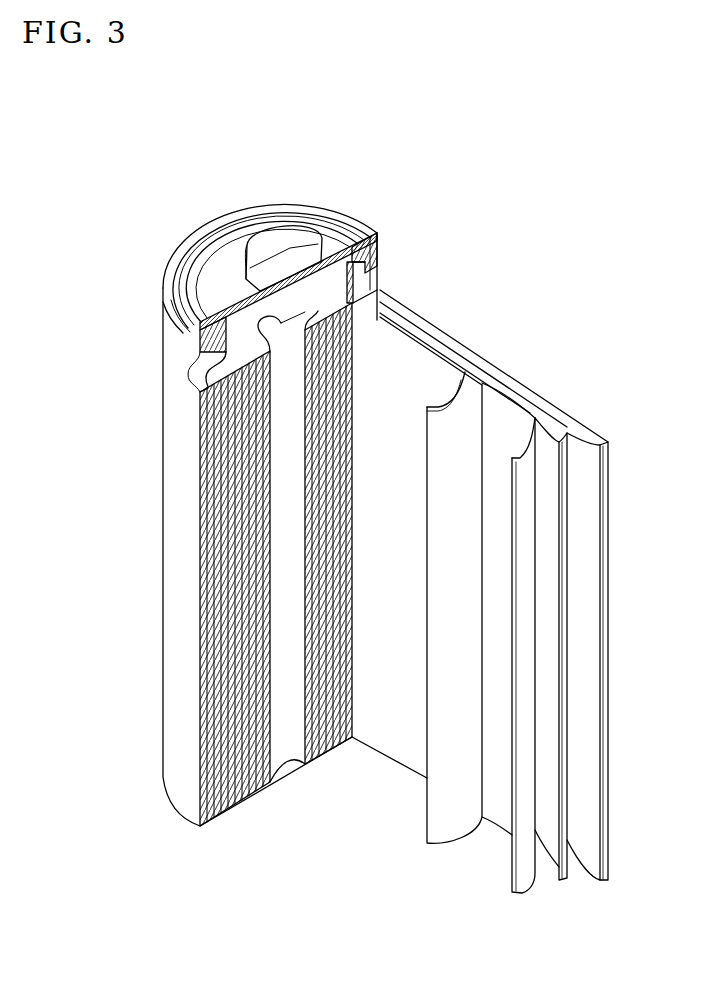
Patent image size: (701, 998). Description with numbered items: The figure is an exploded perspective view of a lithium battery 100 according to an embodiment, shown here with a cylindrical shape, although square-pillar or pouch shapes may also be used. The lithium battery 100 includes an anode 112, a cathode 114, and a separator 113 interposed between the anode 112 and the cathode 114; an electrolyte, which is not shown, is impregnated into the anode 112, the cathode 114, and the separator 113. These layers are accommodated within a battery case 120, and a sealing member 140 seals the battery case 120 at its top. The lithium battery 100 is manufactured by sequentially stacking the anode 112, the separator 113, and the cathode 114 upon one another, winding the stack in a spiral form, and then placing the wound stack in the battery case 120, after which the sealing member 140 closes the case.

The lithium battery 100 is at (302, 158).
The anode 112 is at (594, 430).
The separator 113 is at (465, 368).
The cathode 114 is at (526, 412).
The battery case 120 is at (168, 553).
The sealing member 140 is at (263, 246).